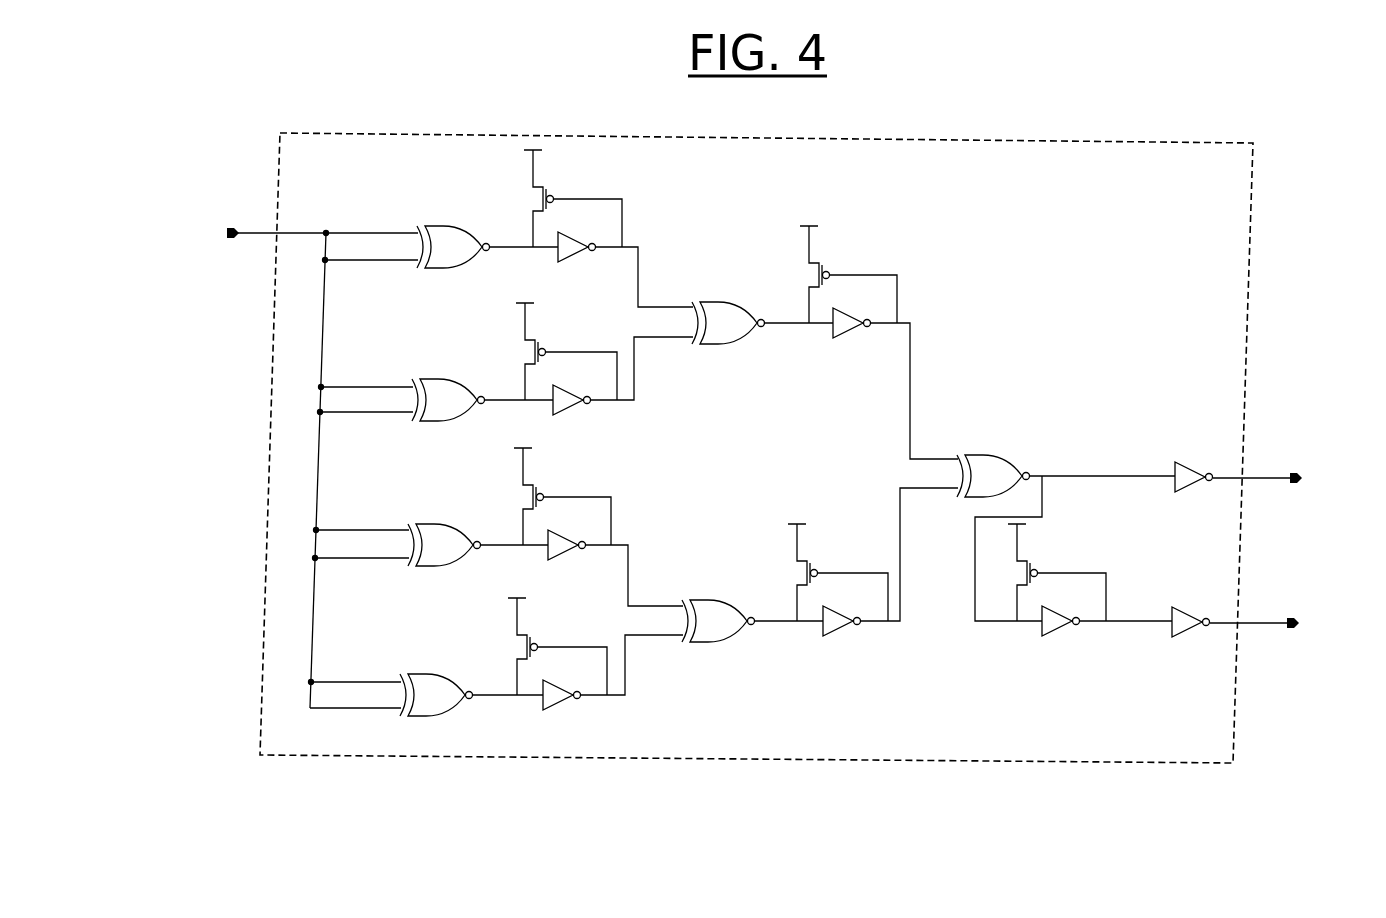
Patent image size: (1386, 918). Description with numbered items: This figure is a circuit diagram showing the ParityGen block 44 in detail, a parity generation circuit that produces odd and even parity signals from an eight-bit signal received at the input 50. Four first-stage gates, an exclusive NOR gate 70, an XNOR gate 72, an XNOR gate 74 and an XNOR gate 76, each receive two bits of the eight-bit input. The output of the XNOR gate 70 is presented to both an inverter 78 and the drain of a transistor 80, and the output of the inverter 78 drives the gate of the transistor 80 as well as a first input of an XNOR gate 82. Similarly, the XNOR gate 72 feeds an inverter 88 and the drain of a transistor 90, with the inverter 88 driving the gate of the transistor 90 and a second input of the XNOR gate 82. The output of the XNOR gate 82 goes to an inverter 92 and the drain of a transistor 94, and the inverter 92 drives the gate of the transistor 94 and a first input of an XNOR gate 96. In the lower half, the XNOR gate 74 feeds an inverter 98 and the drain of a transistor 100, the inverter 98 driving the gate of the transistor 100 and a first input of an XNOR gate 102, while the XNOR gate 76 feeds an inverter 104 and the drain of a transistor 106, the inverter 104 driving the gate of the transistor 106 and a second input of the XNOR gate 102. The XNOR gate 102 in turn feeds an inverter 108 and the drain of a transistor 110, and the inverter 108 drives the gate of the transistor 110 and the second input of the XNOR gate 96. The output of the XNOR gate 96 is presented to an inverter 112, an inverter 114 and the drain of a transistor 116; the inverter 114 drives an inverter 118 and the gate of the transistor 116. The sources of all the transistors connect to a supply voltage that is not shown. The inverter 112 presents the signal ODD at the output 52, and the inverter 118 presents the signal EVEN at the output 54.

The ParityGen block 44 is at (445, 133).
The input 50 is at (273, 228).
The output 52 is at (1250, 470).
The output 54 is at (1240, 615).
The exclusive NOR gate 70 is at (458, 220).
The XNOR gate 72 is at (453, 370).
The XNOR gate 74 is at (418, 518).
The XNOR gate 76 is at (412, 670).
The inverter 78 is at (578, 268).
The transistor 80 is at (547, 183).
The XNOR gate 82 is at (705, 295).
The inverter 88 is at (573, 418).
The transistor 90 is at (520, 353).
The inverter 92 is at (847, 348).
The transistor 94 is at (823, 257).
The XNOR gate 96 is at (978, 445).
The inverter 98 is at (555, 572).
The transistor 100 is at (543, 483).
The XNOR gate 102 is at (693, 593).
The inverter 104 is at (562, 712).
The transistor 106 is at (528, 632).
The inverter 108 is at (845, 645).
The transistor 110 is at (815, 557).
The inverter 112 is at (1192, 455).
The inverter 114 is at (1057, 642).
The transistor 116 is at (1037, 553).
The inverter 118 is at (1198, 605).